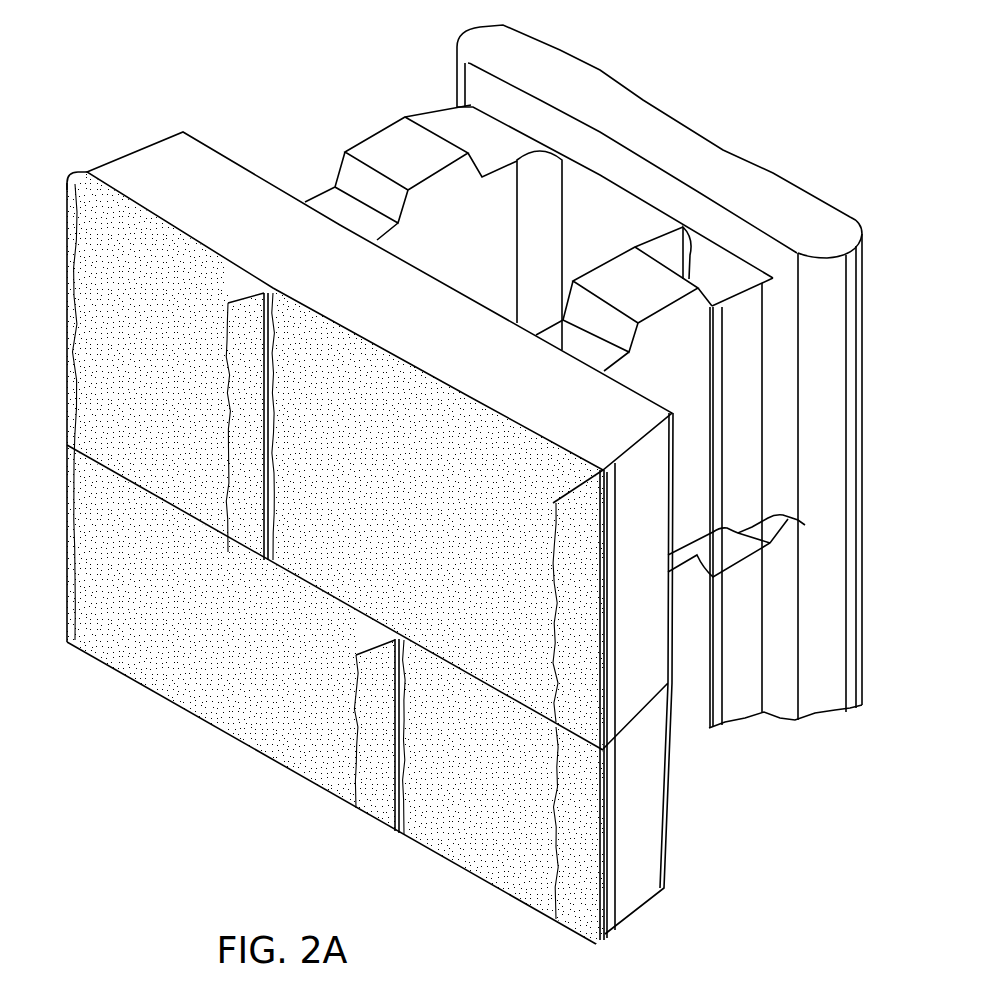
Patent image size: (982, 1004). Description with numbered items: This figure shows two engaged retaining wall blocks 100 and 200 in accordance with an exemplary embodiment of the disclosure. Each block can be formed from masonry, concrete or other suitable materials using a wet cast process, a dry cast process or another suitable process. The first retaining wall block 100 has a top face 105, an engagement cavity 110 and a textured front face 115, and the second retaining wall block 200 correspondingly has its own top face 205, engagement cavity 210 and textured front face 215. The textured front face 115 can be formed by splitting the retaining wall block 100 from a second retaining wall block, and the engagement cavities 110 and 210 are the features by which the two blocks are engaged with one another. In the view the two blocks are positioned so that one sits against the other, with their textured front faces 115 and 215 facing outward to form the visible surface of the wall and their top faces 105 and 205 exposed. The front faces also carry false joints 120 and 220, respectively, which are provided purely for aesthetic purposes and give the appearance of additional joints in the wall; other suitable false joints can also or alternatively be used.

The retaining wall block 100 is at (44, 254).
The top face 105 is at (158, 158).
The engagement cavity 110 is at (330, 202).
The textured front face 115 is at (177, 297).
The false joint 120 is at (258, 400).
The retaining wall block 200 is at (46, 560).
The top face 205 is at (645, 690).
The engagement cavity 210 is at (727, 557).
The textured front face 215 is at (477, 851).
The false joint 220 is at (388, 807).